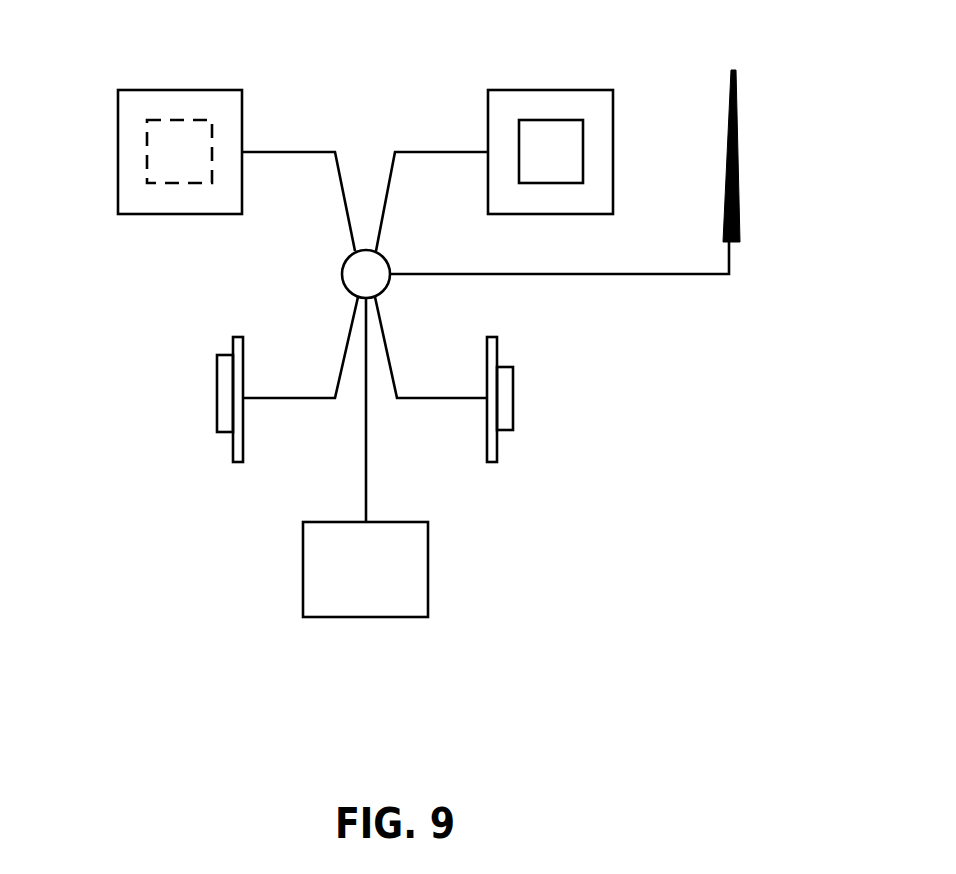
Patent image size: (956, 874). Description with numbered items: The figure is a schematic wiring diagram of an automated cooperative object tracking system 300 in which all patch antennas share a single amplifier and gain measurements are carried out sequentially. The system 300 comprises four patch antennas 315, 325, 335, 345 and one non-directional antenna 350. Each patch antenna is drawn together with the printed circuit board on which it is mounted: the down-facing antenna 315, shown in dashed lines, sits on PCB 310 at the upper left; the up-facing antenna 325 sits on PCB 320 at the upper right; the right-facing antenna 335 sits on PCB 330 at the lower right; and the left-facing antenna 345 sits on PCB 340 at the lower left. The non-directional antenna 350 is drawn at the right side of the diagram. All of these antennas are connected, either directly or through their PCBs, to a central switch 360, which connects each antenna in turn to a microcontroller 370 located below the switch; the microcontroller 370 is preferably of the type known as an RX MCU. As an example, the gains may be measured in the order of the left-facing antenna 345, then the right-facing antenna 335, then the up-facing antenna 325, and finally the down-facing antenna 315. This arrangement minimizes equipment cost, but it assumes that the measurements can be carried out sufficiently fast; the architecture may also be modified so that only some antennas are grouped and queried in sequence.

The automated cooperative object tracking system 300 is at (461, 684).
The PCB 310 is at (130, 188).
The patch antenna 315 is at (168, 133).
The PCB 320 is at (527, 113).
The patch antenna 325 is at (573, 137).
The PCB 330 is at (497, 337).
The patch antenna 335 is at (513, 398).
The PCB 340 is at (233, 462).
The patch antenna 345 is at (217, 398).
The non-directional antenna 350 is at (738, 180).
The switch 360 is at (358, 277).
The microcontroller 370 is at (406, 561).